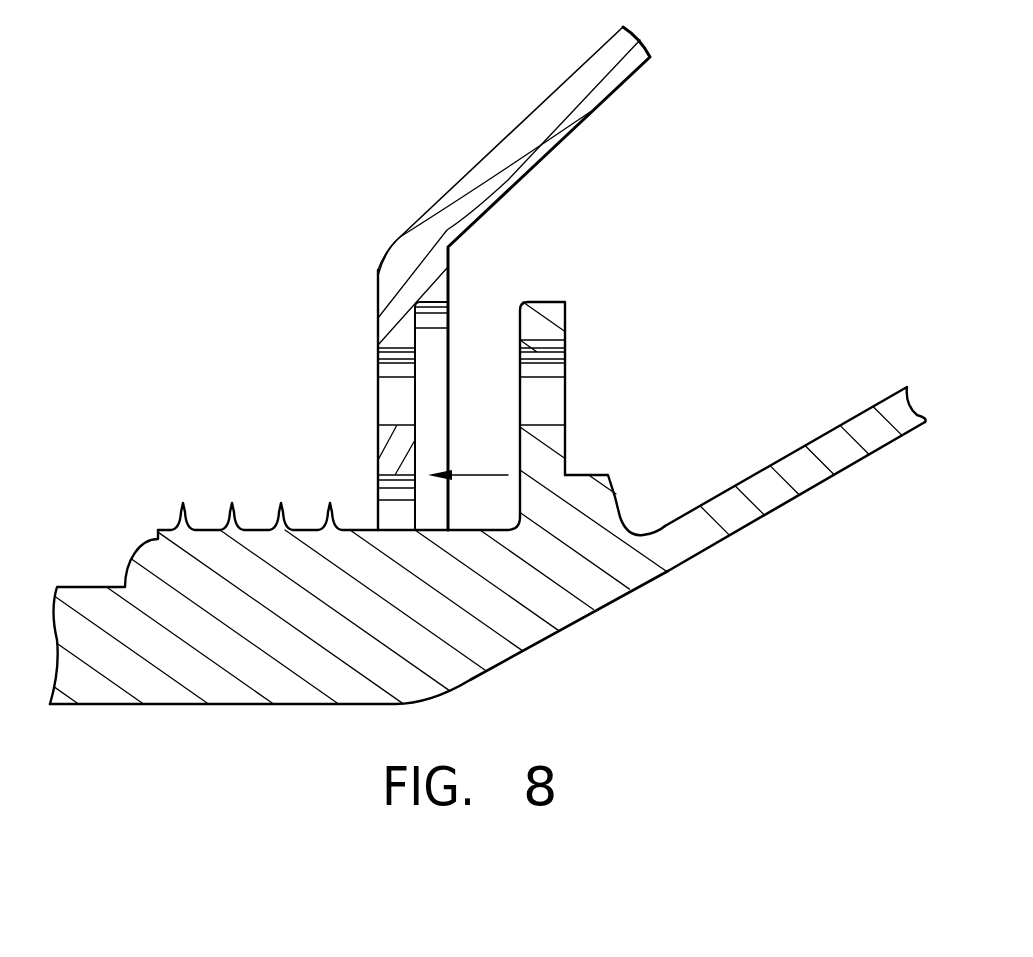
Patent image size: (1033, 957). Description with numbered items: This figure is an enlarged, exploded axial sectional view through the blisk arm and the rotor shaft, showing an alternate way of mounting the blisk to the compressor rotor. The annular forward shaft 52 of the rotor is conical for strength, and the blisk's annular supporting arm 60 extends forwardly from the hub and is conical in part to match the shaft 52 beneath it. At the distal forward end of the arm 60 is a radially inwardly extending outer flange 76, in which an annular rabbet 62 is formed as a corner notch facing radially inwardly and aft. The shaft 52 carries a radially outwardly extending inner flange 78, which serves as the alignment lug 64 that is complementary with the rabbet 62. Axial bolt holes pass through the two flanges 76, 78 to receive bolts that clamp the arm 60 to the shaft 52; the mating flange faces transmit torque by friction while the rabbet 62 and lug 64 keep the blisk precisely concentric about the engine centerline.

The forward shaft 52 is at (822, 433).
The supporting arm 60 is at (552, 148).
The rabbet 62 is at (437, 307).
The lug 64 is at (552, 300).
The outer flange 76 is at (378, 305).
The inner flange 78 is at (567, 442).